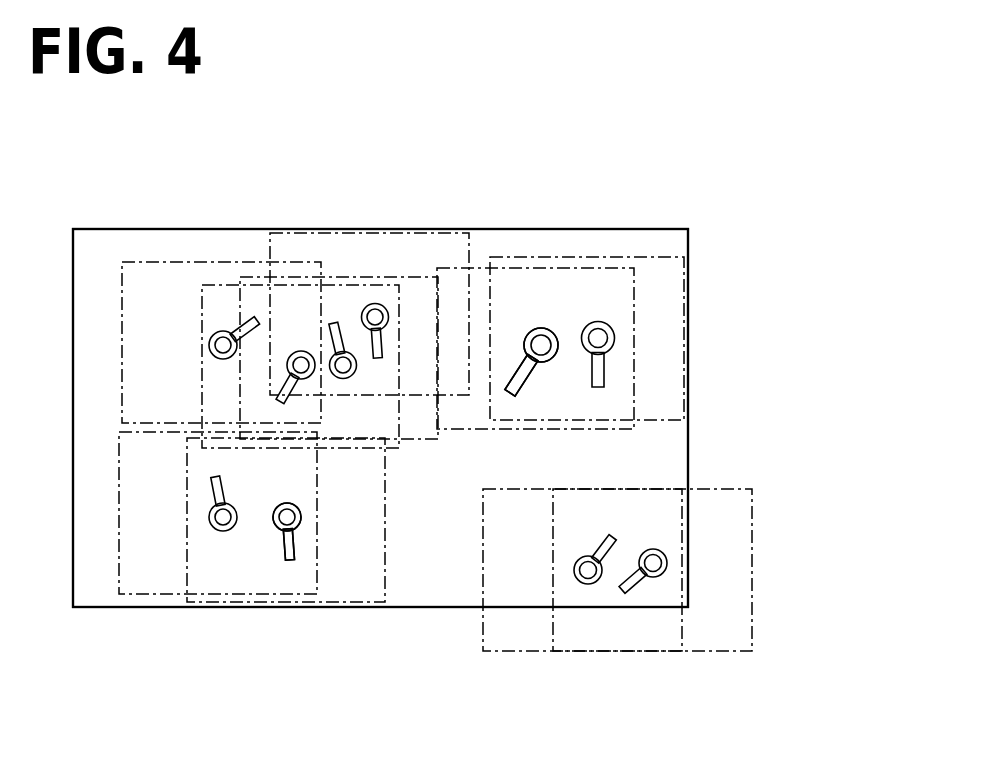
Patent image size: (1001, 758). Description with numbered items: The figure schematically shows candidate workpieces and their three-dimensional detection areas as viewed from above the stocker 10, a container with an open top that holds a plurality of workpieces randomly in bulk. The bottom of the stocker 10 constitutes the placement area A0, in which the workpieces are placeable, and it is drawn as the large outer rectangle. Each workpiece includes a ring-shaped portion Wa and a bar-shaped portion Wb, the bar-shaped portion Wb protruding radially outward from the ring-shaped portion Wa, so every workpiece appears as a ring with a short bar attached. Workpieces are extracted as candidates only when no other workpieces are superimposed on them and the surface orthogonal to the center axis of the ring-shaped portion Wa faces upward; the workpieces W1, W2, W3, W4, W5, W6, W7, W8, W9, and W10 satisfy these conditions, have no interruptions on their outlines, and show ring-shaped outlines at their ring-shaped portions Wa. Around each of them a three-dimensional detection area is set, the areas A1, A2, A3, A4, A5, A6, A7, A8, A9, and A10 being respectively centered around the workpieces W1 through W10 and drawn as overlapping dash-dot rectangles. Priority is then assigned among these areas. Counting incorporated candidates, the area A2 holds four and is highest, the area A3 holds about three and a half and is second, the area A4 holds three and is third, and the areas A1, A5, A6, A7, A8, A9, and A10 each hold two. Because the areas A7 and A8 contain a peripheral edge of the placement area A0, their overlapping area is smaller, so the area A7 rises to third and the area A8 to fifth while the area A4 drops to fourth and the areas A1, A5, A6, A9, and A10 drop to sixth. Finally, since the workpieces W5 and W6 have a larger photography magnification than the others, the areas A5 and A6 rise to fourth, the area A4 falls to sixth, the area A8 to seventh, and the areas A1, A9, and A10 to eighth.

The stocker 10 is at (650, 229).
The placement area A0 is at (688, 470).
The area A1 is at (162, 262).
The area A2 is at (202, 408).
The area A3 is at (294, 270).
The area A4 is at (453, 224).
The area A5 is at (510, 228).
The area A6 is at (667, 257).
The area A7 is at (718, 653).
The area A8 is at (510, 653).
The area A9 is at (118, 483).
The area A10 is at (350, 602).
The workpiece W1 is at (224, 331).
The workpiece W2 is at (287, 368).
The workpiece W3 is at (344, 351).
The workpiece W4 is at (376, 303).
The workpiece W5 is at (542, 328).
The workpiece W6 is at (614, 326).
The workpiece W7 is at (660, 578).
The workpiece W8 is at (583, 584).
The workpiece W9 is at (209, 519).
The workpiece W10 is at (280, 531).
The ring-shaped portion Wa is at (558, 360).
The bar-shaped portion Wb is at (528, 385).